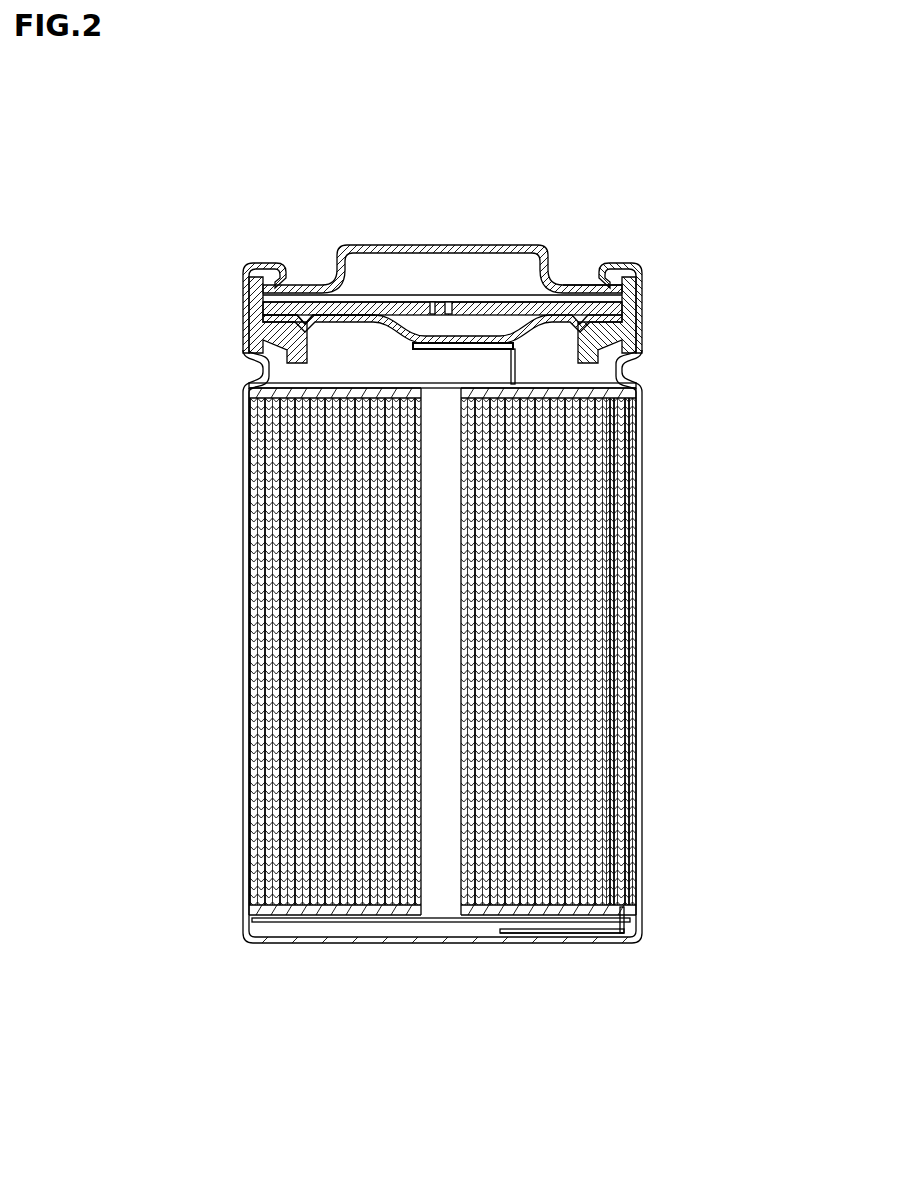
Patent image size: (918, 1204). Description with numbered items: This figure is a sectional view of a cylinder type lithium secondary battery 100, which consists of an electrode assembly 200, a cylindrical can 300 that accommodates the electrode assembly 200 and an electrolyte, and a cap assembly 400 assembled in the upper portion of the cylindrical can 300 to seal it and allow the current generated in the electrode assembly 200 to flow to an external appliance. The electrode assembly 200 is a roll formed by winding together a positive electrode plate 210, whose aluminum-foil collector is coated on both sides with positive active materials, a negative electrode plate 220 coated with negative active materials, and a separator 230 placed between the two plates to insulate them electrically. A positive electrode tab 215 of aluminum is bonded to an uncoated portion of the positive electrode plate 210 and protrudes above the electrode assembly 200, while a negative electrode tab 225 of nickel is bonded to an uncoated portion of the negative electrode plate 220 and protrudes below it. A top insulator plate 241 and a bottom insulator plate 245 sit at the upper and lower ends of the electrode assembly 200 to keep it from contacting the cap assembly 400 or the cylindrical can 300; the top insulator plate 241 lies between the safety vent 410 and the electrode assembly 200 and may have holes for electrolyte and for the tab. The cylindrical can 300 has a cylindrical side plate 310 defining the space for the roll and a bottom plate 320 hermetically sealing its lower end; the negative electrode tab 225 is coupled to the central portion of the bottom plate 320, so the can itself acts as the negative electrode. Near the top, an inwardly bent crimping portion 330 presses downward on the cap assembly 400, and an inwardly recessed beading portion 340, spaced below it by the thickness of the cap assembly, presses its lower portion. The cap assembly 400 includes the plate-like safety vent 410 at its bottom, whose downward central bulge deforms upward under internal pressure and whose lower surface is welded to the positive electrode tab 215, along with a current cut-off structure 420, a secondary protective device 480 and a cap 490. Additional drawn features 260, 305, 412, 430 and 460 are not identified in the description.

The cylinder type lithium secondary battery 100 is at (676, 219).
The electrode assembly 200 is at (758, 365).
The positive electrode plate 210 is at (607, 517).
The positive electrode tab 215 is at (513, 350).
The negative electrode plate 220 is at (630, 436).
The negative electrode tab 225 is at (533, 943).
The separator 230 is at (613, 482).
The top insulator plate 241 is at (580, 386).
The bottom insulator plate 245 is at (643, 945).
The bottom plate 260 is at (393, 920).
The cylindrical can 300 is at (118, 340).
The gasket 305 is at (265, 263).
The cylindrical side plate 310 is at (243, 428).
The bottom plate 320 is at (272, 946).
The crimping portion 330 is at (243, 278).
The beading portion 340 is at (247, 364).
The cap assembly 400 is at (357, 162).
The safety vent 410 is at (370, 313).
The flange portion 412 is at (580, 290).
The current cut-off structure 420 is at (510, 292).
The safety vent 430 is at (460, 302).
The notch 460 is at (433, 303).
The secondary protective device 480 is at (530, 315).
The cap 490 is at (345, 338).